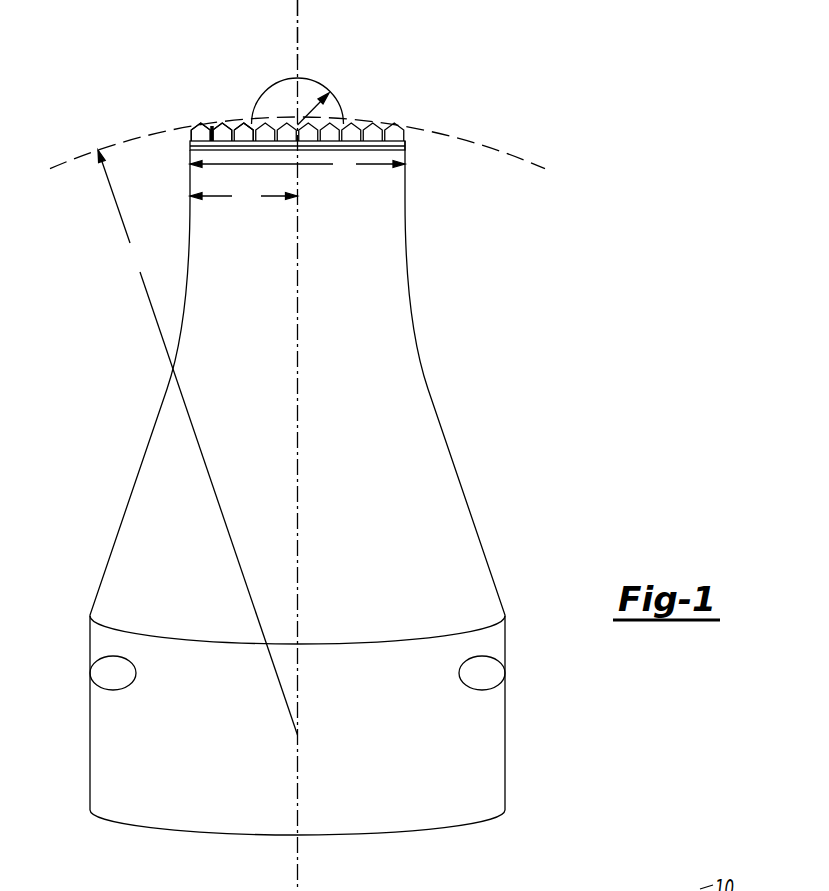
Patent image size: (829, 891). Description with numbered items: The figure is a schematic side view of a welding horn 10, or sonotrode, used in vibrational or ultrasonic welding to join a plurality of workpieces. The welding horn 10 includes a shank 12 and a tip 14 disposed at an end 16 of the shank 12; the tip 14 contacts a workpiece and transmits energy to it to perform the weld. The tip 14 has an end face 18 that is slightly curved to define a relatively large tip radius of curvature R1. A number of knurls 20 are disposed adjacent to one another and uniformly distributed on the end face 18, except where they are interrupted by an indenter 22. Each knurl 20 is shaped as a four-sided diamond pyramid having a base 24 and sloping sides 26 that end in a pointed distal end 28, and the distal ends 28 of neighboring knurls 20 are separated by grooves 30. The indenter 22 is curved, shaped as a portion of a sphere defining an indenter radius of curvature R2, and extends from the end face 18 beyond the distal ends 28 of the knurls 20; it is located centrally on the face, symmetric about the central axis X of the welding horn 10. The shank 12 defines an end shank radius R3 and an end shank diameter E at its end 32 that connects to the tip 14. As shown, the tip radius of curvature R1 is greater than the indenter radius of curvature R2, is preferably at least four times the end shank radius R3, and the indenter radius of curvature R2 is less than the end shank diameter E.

The welding horn 10 is at (98, 390).
The shank 12 is at (392, 337).
The tip 14 is at (410, 147).
The end of the shank 16 is at (228, 104).
The end face 18 is at (210, 137).
The knurls 20 is at (305, 121).
The indenter 22 is at (304, 100).
The base 24 is at (242, 143).
The sloping sides 26 is at (252, 121).
The distal end 28 is at (244, 122).
The grooves 30 is at (212, 128).
The end of the shank 32 is at (408, 152).
The tip radius of curvature R1 is at (198, 442).
The indenter radius of curvature R2 is at (331, 100).
The end shank radius R3 is at (244, 197).
The end shank diameter E is at (297, 164).
The central axis X is at (296, 17).